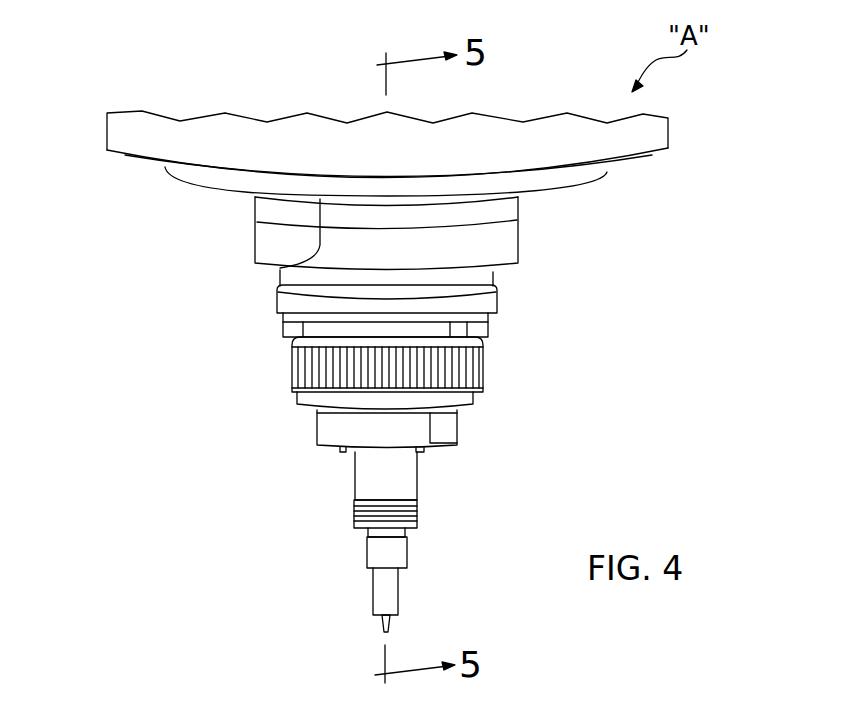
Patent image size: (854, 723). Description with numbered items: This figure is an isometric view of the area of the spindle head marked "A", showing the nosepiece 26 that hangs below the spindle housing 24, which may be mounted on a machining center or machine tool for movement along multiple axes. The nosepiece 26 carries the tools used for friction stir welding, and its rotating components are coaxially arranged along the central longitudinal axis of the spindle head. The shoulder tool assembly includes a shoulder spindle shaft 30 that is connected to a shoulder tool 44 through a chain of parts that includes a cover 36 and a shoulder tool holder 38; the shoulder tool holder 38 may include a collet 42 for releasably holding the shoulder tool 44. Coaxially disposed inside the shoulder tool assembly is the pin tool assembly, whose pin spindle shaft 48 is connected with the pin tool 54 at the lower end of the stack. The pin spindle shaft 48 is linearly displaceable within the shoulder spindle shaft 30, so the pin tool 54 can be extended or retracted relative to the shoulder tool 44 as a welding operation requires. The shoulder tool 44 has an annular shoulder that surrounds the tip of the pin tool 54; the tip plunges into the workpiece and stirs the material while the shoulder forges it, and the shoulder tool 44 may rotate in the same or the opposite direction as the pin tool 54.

The spindle housing 24 is at (130, 134).
The nosepiece 26 is at (528, 392).
The shoulder spindle shaft 30 is at (277, 270).
The pin spindle shaft 48 is at (270, 238).
The cover 36 is at (320, 332).
The shoulder tool holder 38 is at (320, 365).
The collet 42 is at (378, 477).
The shoulder tool 44 is at (387, 590).
The pin tool 54 is at (380, 618).